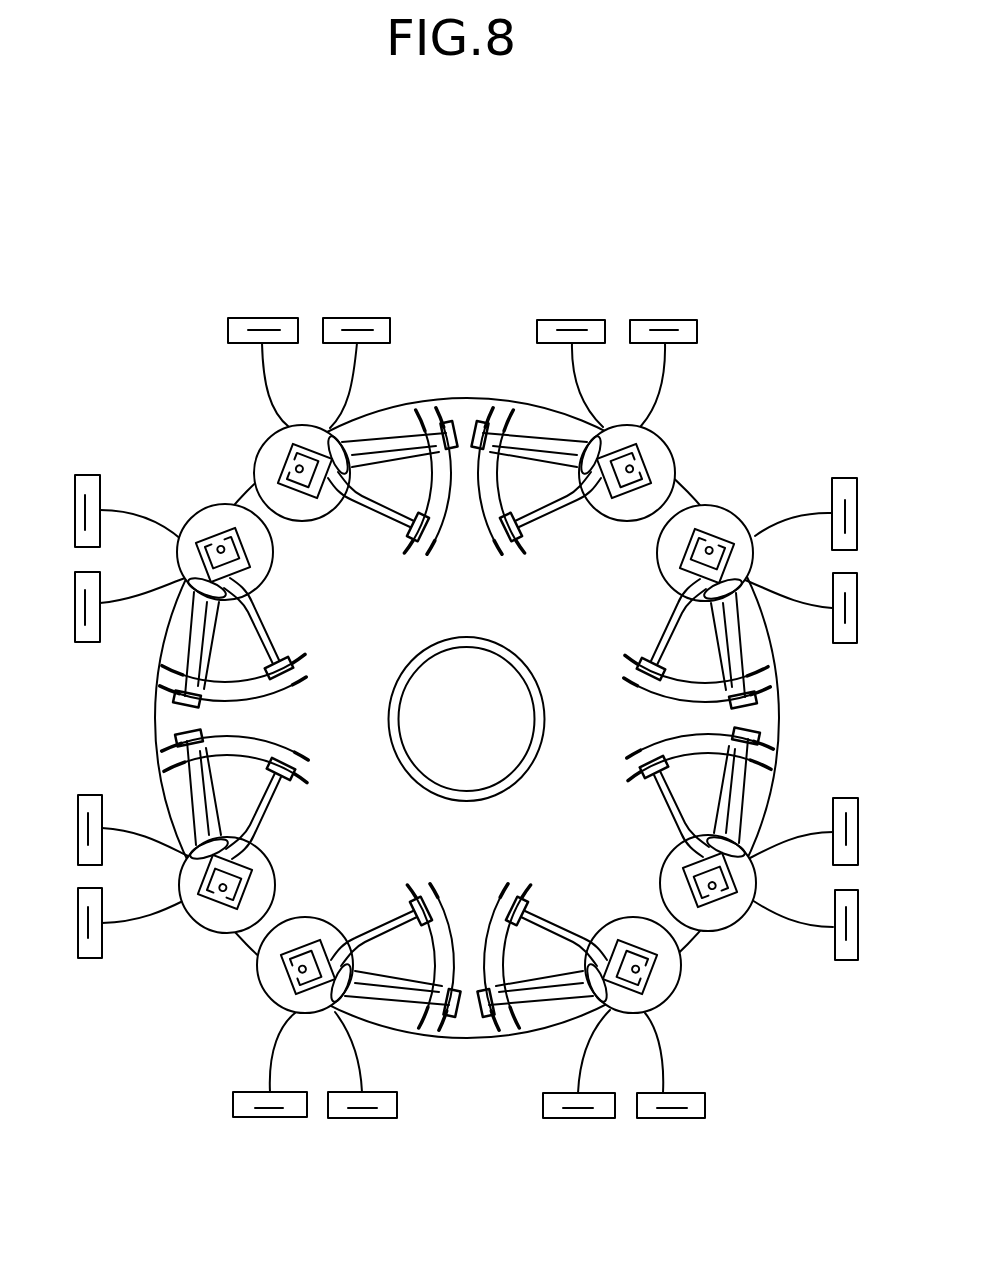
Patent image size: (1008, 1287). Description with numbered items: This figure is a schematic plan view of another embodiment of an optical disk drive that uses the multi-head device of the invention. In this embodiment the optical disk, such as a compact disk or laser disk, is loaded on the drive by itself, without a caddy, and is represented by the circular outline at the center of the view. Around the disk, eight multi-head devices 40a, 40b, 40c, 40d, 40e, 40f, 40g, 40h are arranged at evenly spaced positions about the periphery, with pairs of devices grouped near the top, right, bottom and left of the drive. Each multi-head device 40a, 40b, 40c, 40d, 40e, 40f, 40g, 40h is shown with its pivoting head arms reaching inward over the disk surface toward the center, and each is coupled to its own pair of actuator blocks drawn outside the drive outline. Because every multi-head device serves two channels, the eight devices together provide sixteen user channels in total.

The multi-head device 40a is at (682, 435).
The multi-head device 40b is at (749, 498).
The multi-head device 40c is at (745, 940).
The multi-head device 40d is at (684, 1000).
The multi-head device 40e is at (253, 1000).
The multi-head device 40f is at (186, 935).
The multi-head device 40g is at (185, 498).
The multi-head device 40h is at (246, 430).